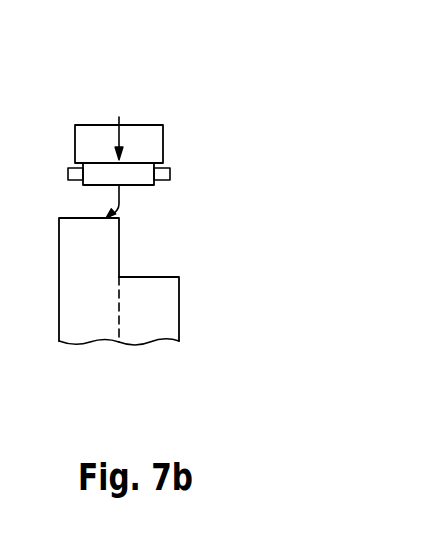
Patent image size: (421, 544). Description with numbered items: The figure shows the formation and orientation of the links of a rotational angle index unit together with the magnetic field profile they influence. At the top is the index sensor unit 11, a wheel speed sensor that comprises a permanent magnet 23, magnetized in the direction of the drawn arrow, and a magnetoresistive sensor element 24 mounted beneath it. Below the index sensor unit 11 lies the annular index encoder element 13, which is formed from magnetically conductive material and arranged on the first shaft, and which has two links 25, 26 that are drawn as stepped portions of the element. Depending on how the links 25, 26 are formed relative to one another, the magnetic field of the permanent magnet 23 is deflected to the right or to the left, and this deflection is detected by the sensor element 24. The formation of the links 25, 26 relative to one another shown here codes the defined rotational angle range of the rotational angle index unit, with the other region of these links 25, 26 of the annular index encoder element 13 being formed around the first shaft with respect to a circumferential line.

The index sensor unit 11 is at (196, 106).
The annular index encoder element 13 is at (200, 306).
The permanent magnet 23 is at (148, 143).
The magnetoresistive sensor element 24 is at (137, 177).
The link 25 is at (90, 320).
The link 26 is at (149, 318).